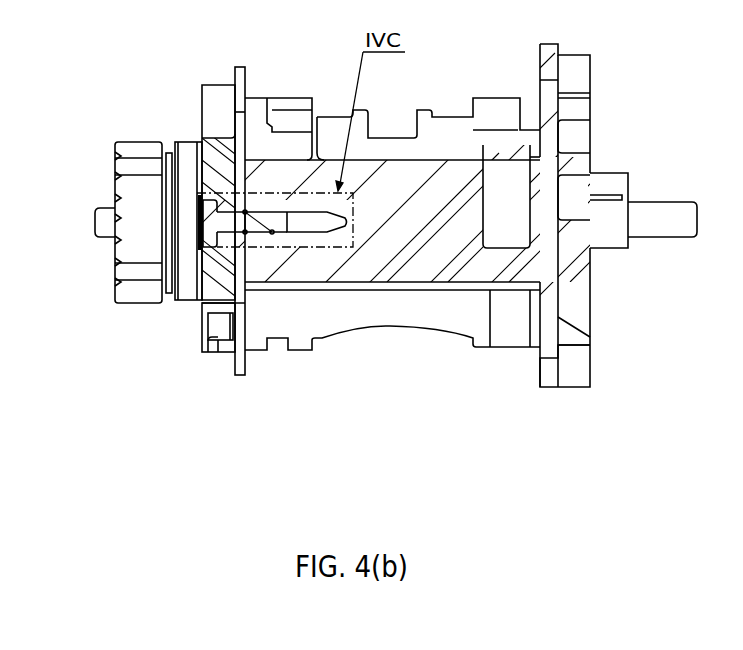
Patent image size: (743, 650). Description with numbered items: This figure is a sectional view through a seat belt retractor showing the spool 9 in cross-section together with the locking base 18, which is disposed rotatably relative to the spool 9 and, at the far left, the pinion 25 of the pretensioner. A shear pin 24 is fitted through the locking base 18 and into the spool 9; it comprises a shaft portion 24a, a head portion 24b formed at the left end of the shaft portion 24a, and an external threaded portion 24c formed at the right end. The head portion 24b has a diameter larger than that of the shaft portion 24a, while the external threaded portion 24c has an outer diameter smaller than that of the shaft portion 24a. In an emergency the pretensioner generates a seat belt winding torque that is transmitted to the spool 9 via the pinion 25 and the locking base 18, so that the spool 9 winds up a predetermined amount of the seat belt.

The spool 9 is at (405, 262).
The locking base 18 is at (222, 152).
The shear pin 24 is at (257, 209).
The shaft portion 24a is at (270, 225).
The head portion 24b is at (198, 240).
The external threaded portion 24c is at (320, 233).
The pinion 25 is at (140, 290).